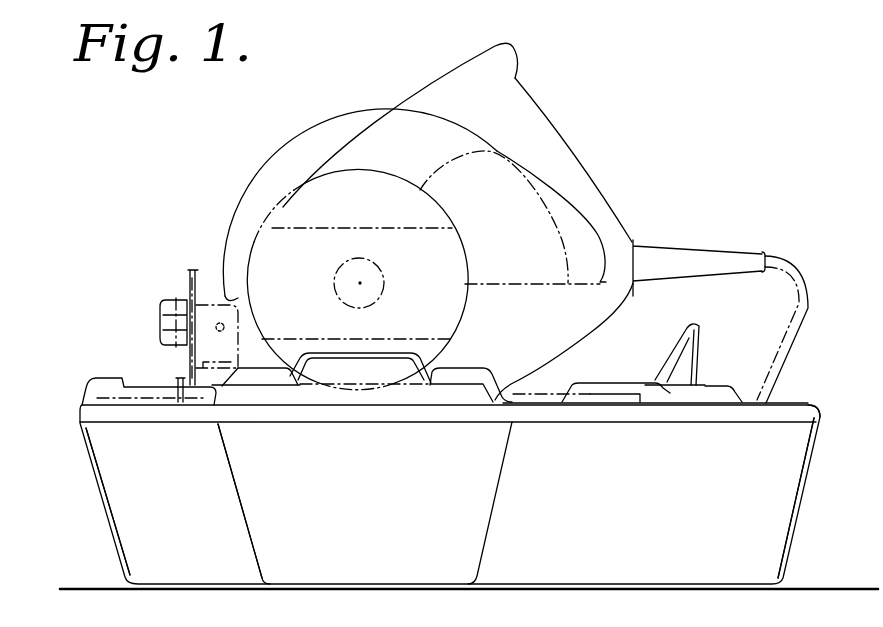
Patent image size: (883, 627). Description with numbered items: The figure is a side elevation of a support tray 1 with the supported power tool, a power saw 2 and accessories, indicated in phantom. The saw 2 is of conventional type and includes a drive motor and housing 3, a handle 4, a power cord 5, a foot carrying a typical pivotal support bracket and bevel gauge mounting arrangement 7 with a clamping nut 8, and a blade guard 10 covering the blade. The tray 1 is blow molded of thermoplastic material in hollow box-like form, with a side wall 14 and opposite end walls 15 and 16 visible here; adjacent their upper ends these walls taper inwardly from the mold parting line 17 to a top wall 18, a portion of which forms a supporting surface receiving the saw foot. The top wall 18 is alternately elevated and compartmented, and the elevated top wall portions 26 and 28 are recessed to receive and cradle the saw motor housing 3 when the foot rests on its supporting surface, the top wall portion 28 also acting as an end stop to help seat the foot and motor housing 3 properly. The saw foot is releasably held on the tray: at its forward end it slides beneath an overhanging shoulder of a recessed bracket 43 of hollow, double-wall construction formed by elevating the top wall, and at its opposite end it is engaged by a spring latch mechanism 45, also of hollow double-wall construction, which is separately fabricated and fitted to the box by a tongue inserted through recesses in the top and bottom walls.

The support tray 1 is at (82, 497).
The power saw 2 is at (342, 195).
The drive motor and housing 3 is at (258, 252).
The handle 4 is at (570, 137).
The power cord 5 is at (806, 282).
The pivotal support bracket and bevel gauge mounting arrangement 7 is at (188, 272).
The clamping nut 8 is at (162, 310).
The blade guard 10 is at (258, 157).
The side wall 14 is at (626, 490).
The end wall 15 is at (113, 536).
The end wall 16 is at (790, 524).
The mold parting line 17 is at (812, 417).
The top wall 18 is at (800, 400).
The top wall portion 26 is at (255, 373).
The top wall portion 28 is at (386, 353).
The recessed bracket 43 is at (80, 378).
The spring latch mechanism 45 is at (716, 327).